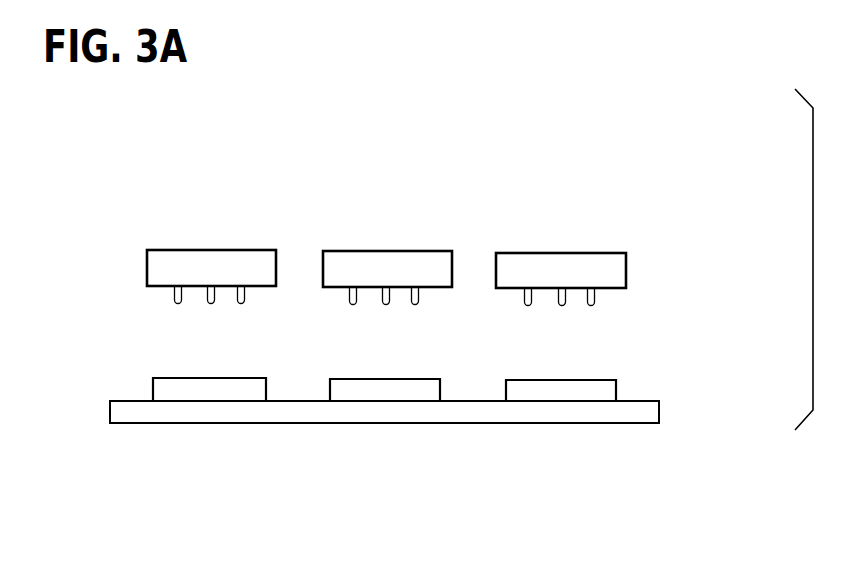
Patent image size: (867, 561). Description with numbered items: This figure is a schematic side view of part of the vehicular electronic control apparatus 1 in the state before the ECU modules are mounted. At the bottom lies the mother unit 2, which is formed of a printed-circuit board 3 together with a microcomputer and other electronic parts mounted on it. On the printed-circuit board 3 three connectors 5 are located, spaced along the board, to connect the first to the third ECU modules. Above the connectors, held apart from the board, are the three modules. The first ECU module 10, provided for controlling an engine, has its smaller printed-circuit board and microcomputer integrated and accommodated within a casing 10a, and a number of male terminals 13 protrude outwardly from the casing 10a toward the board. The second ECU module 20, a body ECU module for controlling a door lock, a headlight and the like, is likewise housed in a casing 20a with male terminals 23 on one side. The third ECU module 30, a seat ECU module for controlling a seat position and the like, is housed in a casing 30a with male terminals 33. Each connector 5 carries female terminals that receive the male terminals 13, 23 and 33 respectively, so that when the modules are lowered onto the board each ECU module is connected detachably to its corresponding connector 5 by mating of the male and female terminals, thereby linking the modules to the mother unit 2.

The vehicular electronic control apparatus 1 is at (608, 122).
The mother unit 2 is at (627, 400).
The printed-circuit board 3 is at (627, 414).
The connector 5 is at (232, 378).
The first ECU module 10 is at (199, 249).
The casing 10a is at (252, 258).
The male terminals 13 is at (173, 297).
The second ECU module 20 is at (374, 249).
The casing 20a is at (427, 258).
The male terminals 23 is at (350, 297).
The third ECU module 30 is at (560, 252).
The casing 30a is at (602, 267).
The male terminals 33 is at (523, 300).